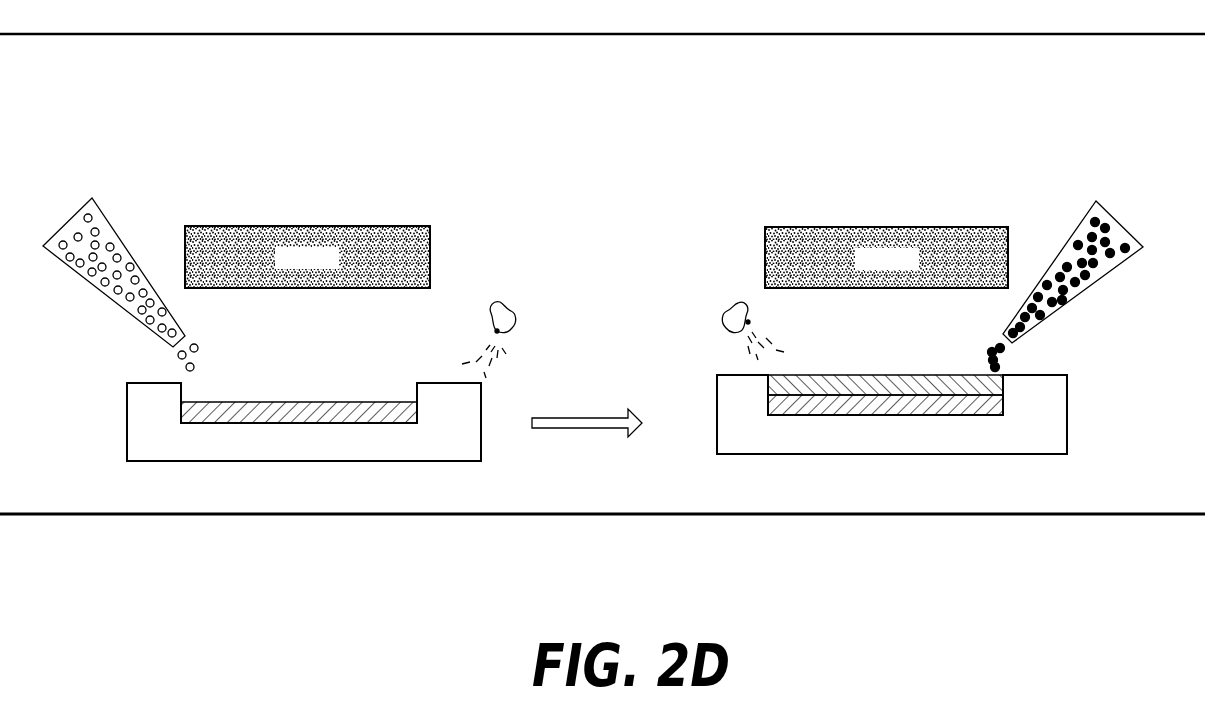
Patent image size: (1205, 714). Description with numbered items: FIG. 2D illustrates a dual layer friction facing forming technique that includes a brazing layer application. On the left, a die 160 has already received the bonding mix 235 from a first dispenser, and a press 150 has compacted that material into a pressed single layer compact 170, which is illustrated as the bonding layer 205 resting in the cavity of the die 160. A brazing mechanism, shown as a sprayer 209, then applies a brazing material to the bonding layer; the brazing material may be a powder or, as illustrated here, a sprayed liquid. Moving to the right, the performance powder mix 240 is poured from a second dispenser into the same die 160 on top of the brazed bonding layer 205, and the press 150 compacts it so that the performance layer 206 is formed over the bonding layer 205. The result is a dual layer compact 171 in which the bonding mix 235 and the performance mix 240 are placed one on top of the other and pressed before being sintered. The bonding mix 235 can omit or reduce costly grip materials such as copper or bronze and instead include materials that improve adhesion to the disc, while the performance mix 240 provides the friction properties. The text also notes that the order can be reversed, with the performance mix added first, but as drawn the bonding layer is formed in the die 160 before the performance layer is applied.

The press 150 is at (252, 226).
The die 160 is at (263, 443).
The single layer compact 170 is at (232, 410).
The dual layer compact 171 is at (911, 476).
The bonding layer 205 is at (770, 400).
The layer 2 206 is at (1000, 382).
The sprayer 209 is at (500, 302).
The bonding mix 235 is at (92, 198).
The performance powder mix 240 is at (1106, 208).